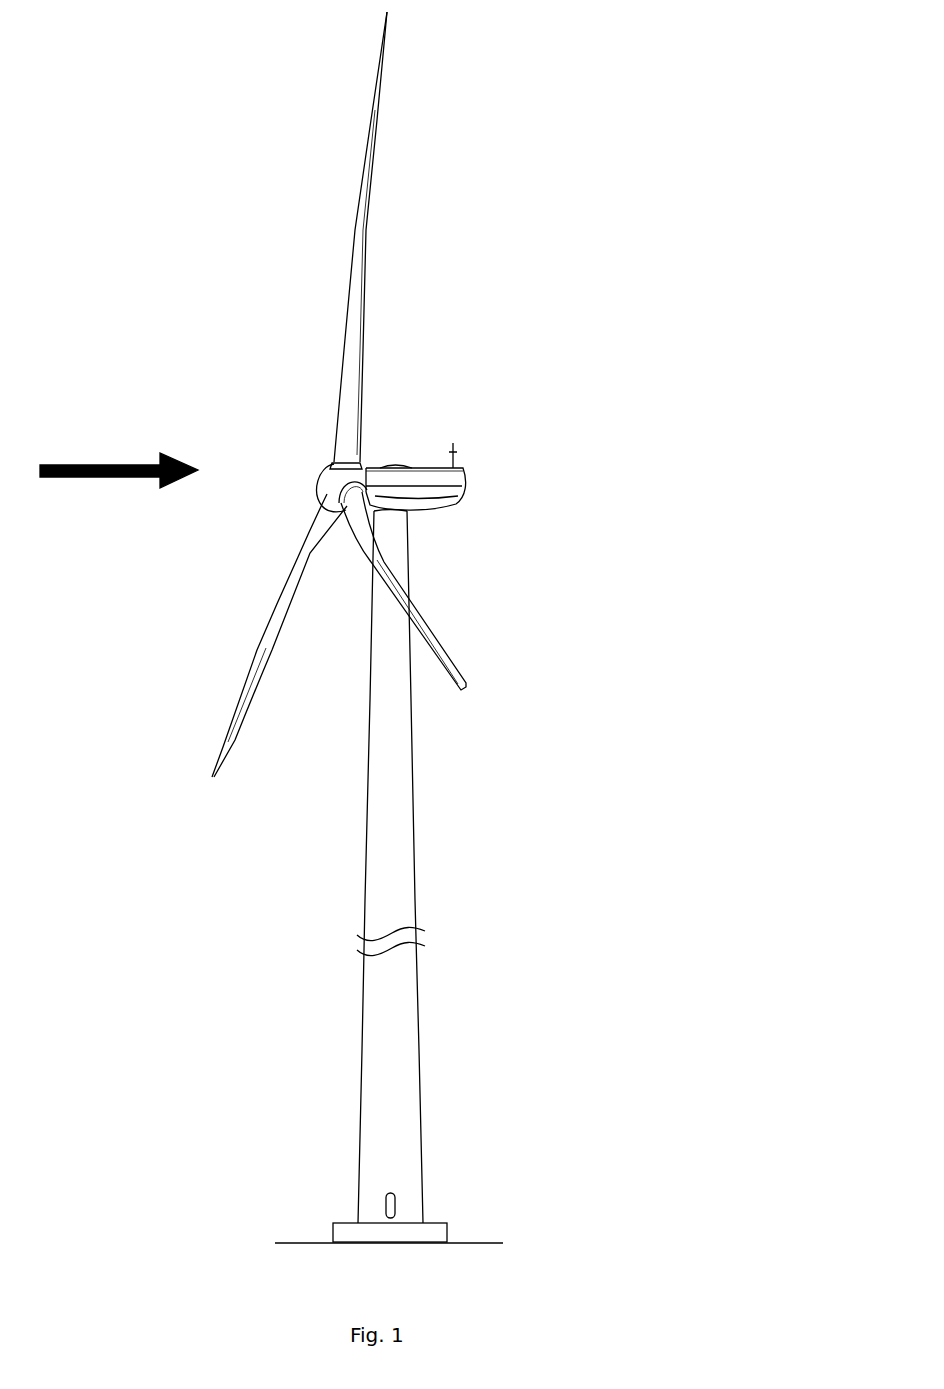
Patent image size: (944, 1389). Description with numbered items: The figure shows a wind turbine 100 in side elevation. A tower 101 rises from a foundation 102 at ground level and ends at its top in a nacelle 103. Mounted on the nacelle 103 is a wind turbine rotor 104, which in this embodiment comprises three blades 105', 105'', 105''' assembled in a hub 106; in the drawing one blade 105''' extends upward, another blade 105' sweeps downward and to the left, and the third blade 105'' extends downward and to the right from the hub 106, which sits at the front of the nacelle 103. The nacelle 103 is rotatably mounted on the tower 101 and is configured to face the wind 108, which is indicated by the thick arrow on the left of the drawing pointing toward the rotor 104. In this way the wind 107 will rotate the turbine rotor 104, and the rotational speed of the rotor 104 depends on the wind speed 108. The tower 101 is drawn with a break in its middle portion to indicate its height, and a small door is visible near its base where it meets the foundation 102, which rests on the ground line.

The wind turbine 100 is at (472, 363).
The tower 101 is at (390, 790).
The foundation 102 is at (431, 1227).
The nacelle 103 is at (420, 485).
The wind turbine rotor 104 is at (283, 282).
The blade 105' is at (261, 635).
The blade 105'' is at (457, 591).
The blade 105''' is at (394, 240).
The hub 106 is at (332, 467).
The wind 107 is at (120, 475).
The wind speed 108 is at (73, 592).